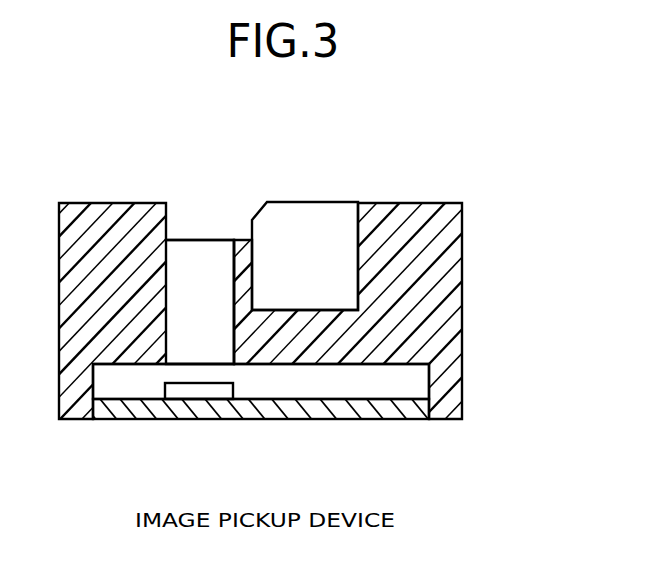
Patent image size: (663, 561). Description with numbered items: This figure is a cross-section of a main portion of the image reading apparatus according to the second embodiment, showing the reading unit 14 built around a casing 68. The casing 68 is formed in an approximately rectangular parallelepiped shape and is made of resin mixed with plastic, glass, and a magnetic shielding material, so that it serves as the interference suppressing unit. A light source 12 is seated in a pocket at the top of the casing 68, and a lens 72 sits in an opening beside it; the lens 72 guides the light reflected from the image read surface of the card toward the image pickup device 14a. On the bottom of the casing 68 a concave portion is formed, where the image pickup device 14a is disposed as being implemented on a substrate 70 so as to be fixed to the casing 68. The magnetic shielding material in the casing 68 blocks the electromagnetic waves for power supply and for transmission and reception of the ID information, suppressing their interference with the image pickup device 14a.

The reading unit 14 is at (510, 174).
The image pickup device 14a is at (199, 392).
The light source 12 is at (301, 217).
The casing 68 is at (448, 280).
The substrate 70 is at (390, 410).
The lens 72 is at (204, 252).